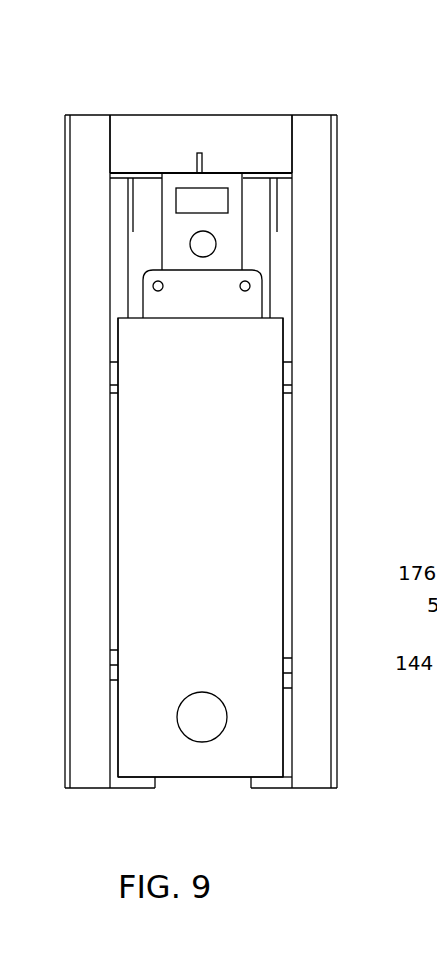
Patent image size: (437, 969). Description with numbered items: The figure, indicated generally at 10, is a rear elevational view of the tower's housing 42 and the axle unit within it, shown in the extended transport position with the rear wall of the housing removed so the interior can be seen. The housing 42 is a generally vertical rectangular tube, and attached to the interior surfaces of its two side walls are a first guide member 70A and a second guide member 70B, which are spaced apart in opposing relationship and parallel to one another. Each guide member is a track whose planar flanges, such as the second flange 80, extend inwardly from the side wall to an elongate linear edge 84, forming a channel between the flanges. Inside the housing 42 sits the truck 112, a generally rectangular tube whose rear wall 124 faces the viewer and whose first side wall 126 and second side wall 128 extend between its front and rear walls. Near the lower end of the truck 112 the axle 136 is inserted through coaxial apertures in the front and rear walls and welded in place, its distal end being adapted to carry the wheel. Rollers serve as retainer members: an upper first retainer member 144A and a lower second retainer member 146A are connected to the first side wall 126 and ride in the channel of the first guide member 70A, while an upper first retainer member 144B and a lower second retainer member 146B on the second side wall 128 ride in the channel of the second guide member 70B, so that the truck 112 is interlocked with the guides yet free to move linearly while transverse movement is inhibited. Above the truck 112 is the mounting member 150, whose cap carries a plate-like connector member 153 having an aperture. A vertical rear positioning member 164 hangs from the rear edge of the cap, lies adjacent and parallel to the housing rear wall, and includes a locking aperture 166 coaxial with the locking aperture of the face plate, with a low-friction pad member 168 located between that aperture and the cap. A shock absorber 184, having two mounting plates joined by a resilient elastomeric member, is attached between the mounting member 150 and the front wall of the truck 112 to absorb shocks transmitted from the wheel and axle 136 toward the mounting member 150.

The assembly 10 is at (315, 53).
The housing 42 is at (63, 599).
The first guide member 70A is at (318, 525).
The second guide member 70B is at (90, 525).
The second flange 80 is at (90, 472).
The edge 84 is at (112, 138).
The truck 112 is at (250, 602).
The rear wall 124 is at (168, 528).
The first side wall 126 is at (283, 438).
The second side wall 128 is at (120, 435).
The axle 136 is at (203, 730).
The upper first retainer member 144A is at (290, 353).
The upper first retainer member 144B is at (117, 390).
The lower second retainer member 146A is at (290, 685).
The lower second retainer member 146B is at (118, 648).
The mounting member 150 is at (282, 168).
The connector member 153 is at (200, 150).
The rear positioning member 164 is at (338, 227).
The locking aperture 166 is at (217, 250).
The low-friction pad member 168 is at (207, 198).
The shock absorber 184 is at (248, 303).